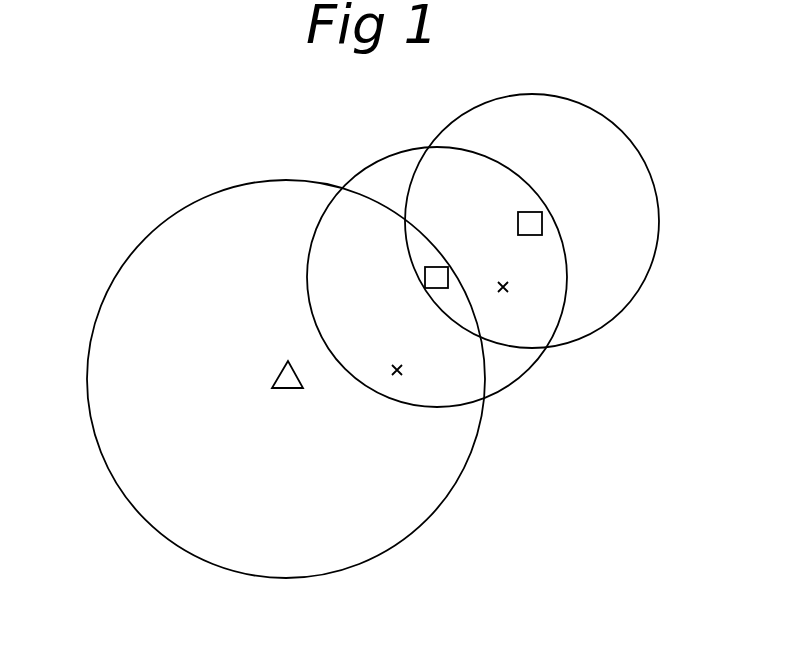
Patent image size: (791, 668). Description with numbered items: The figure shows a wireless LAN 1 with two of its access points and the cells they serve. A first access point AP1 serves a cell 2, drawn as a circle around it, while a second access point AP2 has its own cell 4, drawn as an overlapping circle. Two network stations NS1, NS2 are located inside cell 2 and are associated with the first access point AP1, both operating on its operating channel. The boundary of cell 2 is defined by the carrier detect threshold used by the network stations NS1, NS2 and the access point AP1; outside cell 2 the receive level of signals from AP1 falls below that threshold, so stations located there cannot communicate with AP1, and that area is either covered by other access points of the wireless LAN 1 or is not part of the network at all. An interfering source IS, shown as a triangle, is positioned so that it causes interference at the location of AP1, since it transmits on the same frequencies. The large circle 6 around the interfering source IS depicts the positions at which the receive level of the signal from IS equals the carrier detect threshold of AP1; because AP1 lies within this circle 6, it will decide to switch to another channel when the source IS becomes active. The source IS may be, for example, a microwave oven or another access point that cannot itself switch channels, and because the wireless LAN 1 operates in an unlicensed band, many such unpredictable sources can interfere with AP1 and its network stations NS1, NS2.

The wireless LAN 1 is at (372, 336).
The cell 2 is at (503, 388).
The cell 4 is at (645, 285).
The circle 6 is at (108, 291).
The first access point AP1 is at (451, 265).
The second access point AP2 is at (512, 209).
The network station NS1 is at (521, 299).
The network station NS2 is at (417, 383).
The interfering source IS is at (277, 364).